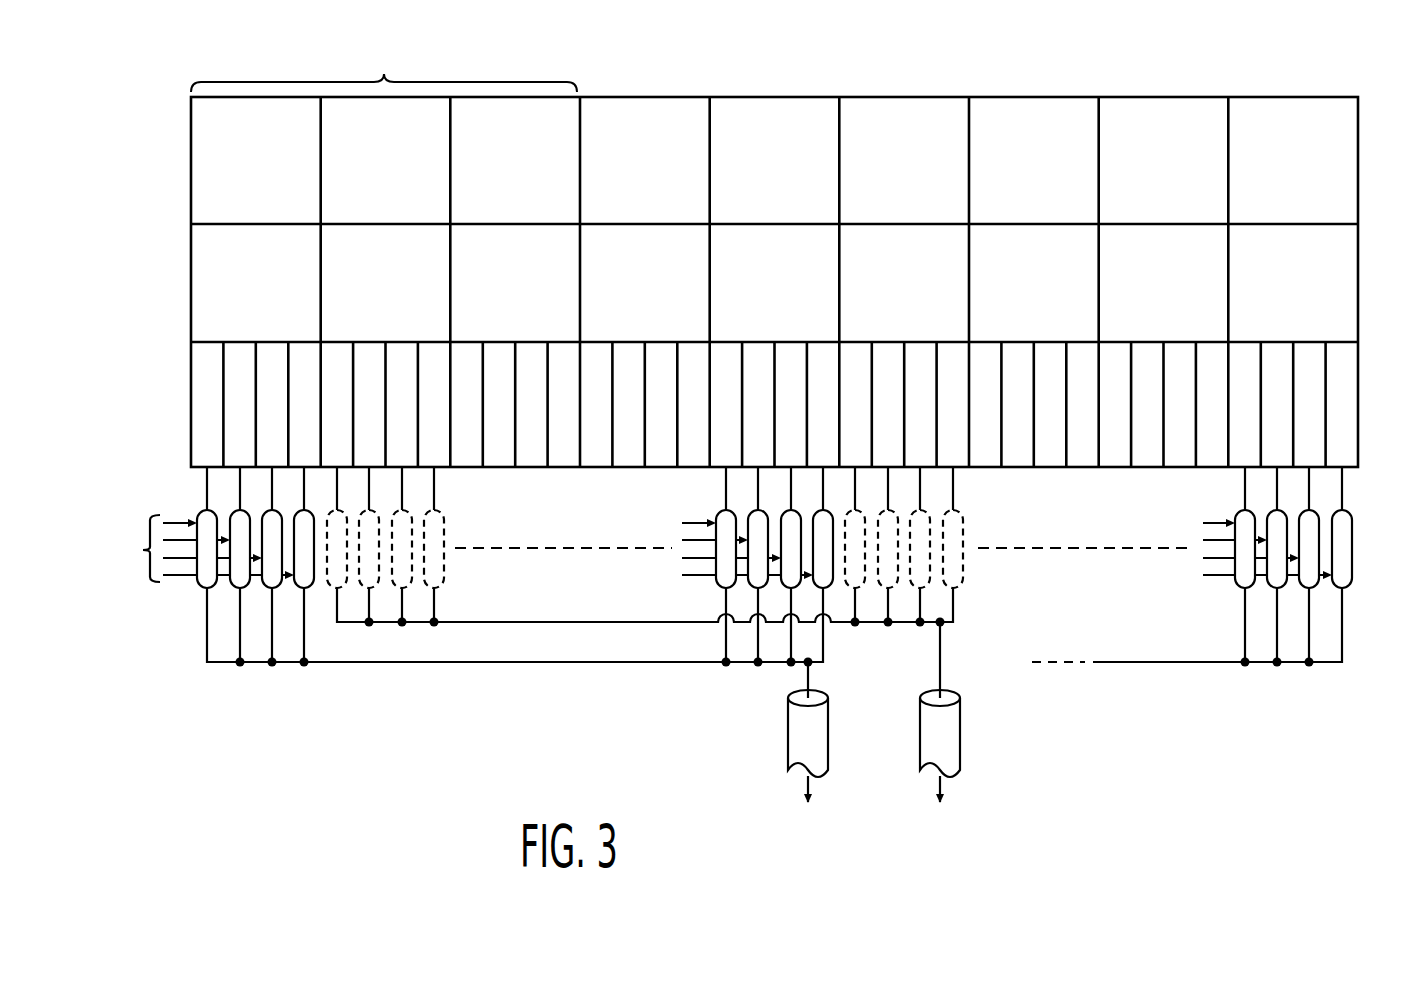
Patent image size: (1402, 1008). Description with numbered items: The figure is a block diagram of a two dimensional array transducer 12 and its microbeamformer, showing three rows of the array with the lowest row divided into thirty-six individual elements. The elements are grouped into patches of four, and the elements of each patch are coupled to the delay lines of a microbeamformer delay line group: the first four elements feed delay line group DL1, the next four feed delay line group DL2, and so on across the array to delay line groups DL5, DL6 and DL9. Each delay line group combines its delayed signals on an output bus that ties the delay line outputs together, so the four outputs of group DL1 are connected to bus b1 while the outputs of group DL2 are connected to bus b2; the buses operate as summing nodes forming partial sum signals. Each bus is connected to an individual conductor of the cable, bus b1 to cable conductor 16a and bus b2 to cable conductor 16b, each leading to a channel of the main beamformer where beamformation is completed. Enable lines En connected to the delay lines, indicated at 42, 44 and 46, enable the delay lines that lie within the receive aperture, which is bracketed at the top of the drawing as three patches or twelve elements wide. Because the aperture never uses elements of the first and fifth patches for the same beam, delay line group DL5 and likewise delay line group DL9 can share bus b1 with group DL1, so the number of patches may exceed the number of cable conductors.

The two dimensional array transducer 12 is at (1038, 68).
The enable line connection 42 is at (210, 553).
The enable line connection 44 is at (731, 547).
The enable line connection 46 is at (1248, 554).
The cable conductor 16a is at (789, 732).
The cable conductor 16b is at (958, 732).
The delay line group DL1 is at (195, 593).
The delay line group DL2 is at (450, 584).
The delay line group DL5 is at (711, 590).
The delay line group DL6 is at (973, 590).
The delay line group DL9 is at (1232, 591).
The bus b1 is at (452, 666).
The bus b2 is at (570, 625).